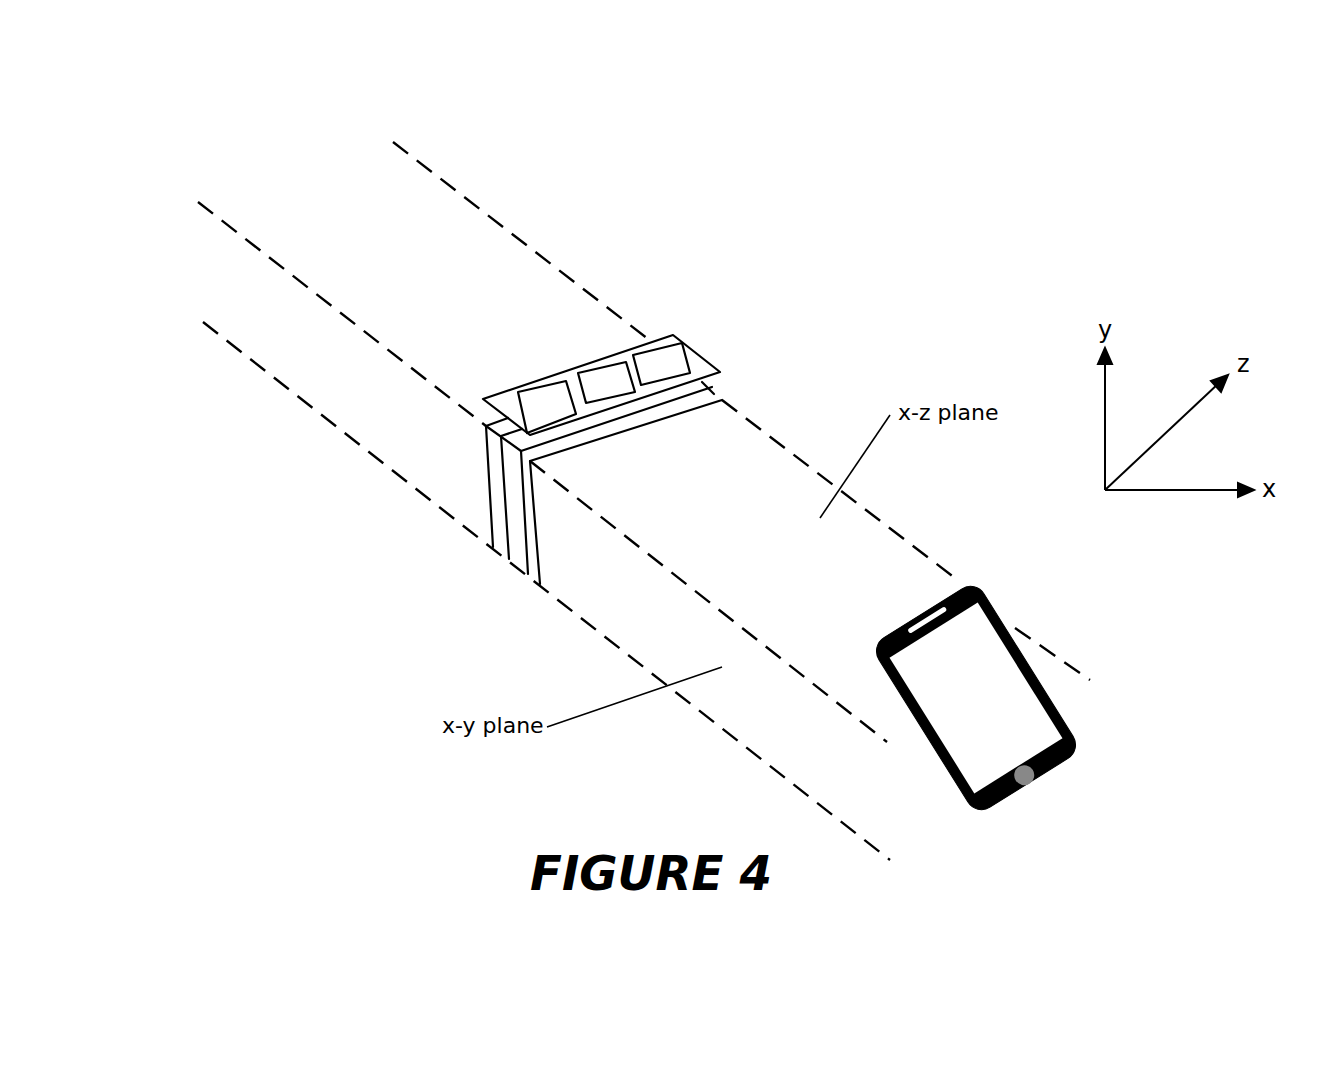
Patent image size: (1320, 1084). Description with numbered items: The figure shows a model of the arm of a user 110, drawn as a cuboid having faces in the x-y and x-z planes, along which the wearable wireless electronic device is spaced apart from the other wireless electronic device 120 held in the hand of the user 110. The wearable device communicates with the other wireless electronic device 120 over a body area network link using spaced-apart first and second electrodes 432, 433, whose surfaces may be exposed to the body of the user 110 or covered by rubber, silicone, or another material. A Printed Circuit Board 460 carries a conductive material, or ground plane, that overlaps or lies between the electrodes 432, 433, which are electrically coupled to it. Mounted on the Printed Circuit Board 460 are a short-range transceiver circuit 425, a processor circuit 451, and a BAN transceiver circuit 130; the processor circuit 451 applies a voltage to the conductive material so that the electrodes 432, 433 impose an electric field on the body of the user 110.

The user 110 is at (363, 377).
The other wireless electronic device 120 is at (1033, 720).
The BAN transceiver circuit 130 is at (650, 363).
The short-range transceiver circuit 425 is at (540, 410).
The processor circuit 451 is at (592, 388).
The Printed Circuit Board 460 is at (697, 362).
The first electrode 432 is at (493, 494).
The second electrode 433 is at (528, 567).